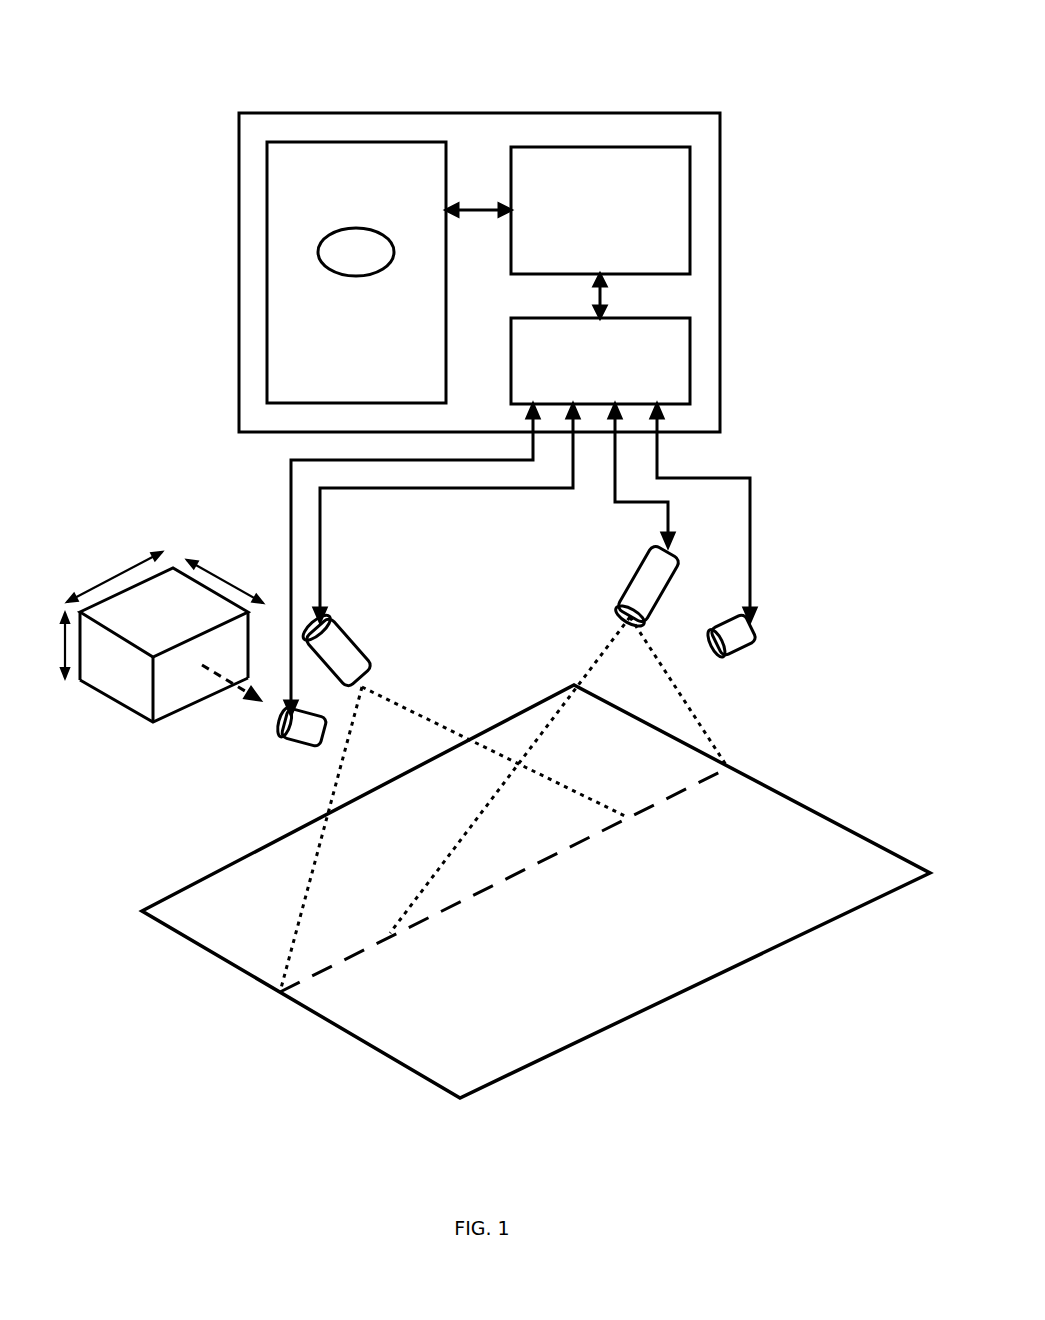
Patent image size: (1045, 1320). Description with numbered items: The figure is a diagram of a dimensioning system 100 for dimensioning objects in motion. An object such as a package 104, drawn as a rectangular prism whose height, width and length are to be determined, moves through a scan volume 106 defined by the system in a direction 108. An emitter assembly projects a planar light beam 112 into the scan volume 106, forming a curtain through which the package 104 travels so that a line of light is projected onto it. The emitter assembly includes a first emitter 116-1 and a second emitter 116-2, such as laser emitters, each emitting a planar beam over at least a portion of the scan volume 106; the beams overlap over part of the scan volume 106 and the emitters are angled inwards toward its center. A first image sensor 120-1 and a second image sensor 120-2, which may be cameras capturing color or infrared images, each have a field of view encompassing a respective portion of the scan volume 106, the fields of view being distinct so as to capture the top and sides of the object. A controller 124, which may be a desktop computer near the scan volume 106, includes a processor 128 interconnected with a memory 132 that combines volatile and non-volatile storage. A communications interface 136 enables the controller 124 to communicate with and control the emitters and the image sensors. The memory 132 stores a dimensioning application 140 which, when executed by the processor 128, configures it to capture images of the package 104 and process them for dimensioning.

The dimensioning system 100 is at (168, 105).
The package 104 is at (125, 710).
The scan volume 106 is at (808, 808).
The direction 108 is at (258, 702).
The planar light beam 112 is at (333, 967).
The first emitter 116-1 is at (353, 640).
The second emitter 116-2 is at (633, 577).
The first image sensor 120-1 is at (297, 747).
The second image sensor 120-2 is at (757, 635).
The controller 124 is at (723, 173).
The processor 128 is at (600, 210).
The memory 132 is at (356, 272).
The communications interface 136 is at (600, 361).
The dimensioning application 140 is at (356, 252).